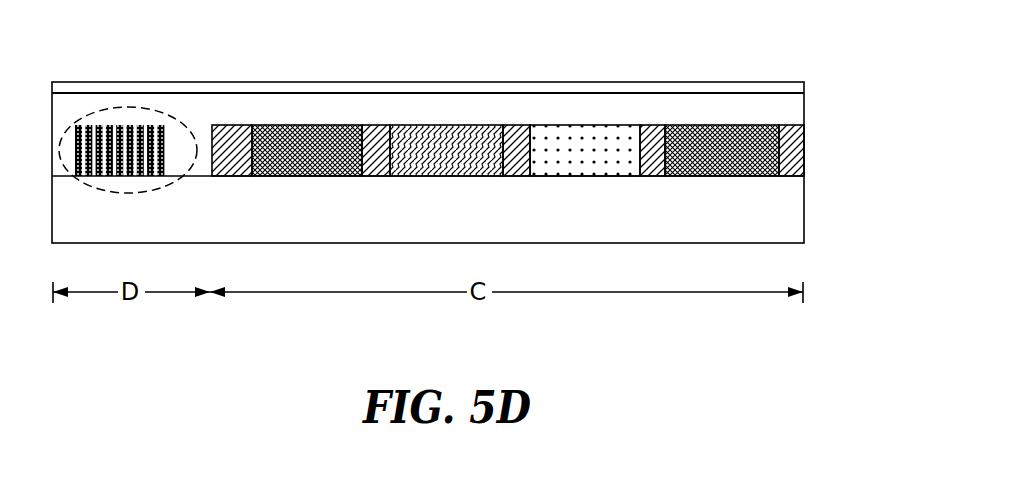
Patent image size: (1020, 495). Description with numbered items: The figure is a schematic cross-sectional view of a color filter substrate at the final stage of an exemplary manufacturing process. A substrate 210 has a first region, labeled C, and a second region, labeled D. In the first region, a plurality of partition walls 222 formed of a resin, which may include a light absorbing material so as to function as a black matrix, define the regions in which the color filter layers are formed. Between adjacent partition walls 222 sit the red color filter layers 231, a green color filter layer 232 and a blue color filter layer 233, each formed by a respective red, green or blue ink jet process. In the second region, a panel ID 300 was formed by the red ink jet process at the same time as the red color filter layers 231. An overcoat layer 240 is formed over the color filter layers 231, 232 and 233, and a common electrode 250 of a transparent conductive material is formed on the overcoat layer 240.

The substrate 210 is at (778, 215).
The partition walls 222 is at (225, 125).
The red color filter layers 231 is at (308, 125).
The green color filter layer 232 is at (450, 125).
The blue color filter layer 233 is at (597, 125).
The overcoat layer 240 is at (793, 112).
The common electrode 250 is at (790, 90).
The panel ID 300 is at (142, 110).